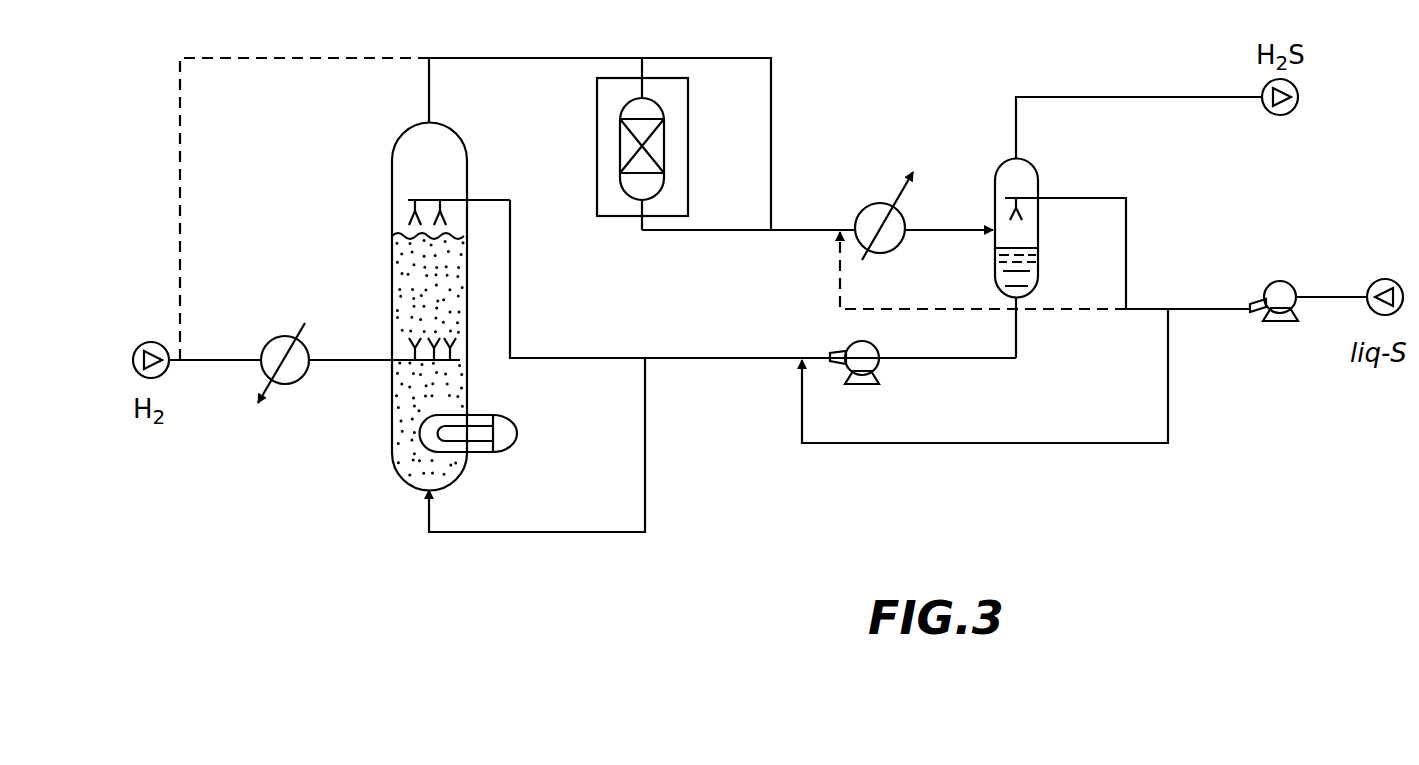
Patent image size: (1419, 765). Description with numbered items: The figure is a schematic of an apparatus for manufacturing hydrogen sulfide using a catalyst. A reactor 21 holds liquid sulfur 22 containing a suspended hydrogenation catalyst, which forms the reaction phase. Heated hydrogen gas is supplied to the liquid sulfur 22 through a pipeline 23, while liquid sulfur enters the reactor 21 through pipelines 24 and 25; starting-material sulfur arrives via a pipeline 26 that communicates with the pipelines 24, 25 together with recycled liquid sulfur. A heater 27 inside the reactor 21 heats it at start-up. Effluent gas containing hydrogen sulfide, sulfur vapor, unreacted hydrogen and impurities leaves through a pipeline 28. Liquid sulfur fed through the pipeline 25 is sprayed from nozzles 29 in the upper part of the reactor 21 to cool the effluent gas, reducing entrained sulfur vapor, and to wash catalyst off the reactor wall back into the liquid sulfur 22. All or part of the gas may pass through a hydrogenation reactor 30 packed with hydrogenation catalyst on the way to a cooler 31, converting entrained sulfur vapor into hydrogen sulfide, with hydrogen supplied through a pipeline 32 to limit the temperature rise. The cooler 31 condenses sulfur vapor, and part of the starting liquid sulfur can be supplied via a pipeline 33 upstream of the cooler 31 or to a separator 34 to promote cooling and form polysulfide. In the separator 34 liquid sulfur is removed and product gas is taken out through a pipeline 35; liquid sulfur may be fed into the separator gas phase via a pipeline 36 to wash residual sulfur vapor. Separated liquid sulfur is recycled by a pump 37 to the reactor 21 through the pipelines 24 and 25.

The reactor 21 is at (392, 150).
The liquid sulfur 22 is at (400, 263).
The pipeline 23 is at (228, 360).
The pipeline 24 is at (662, 478).
The pipeline 25 is at (512, 322).
The pipeline 26 is at (1045, 443).
The heater 27 is at (517, 425).
The pipeline 28 is at (536, 57).
The nozzles 29 is at (404, 207).
The hydrogenation reactor 30 is at (620, 112).
The cooler 31 is at (866, 208).
The pipeline 32 is at (374, 58).
The pipeline 33 is at (1080, 309).
The separator 34 is at (1027, 238).
The pipeline 35 is at (1123, 97).
The pipeline 36 is at (1128, 268).
The recycle pump 37 is at (925, 358).